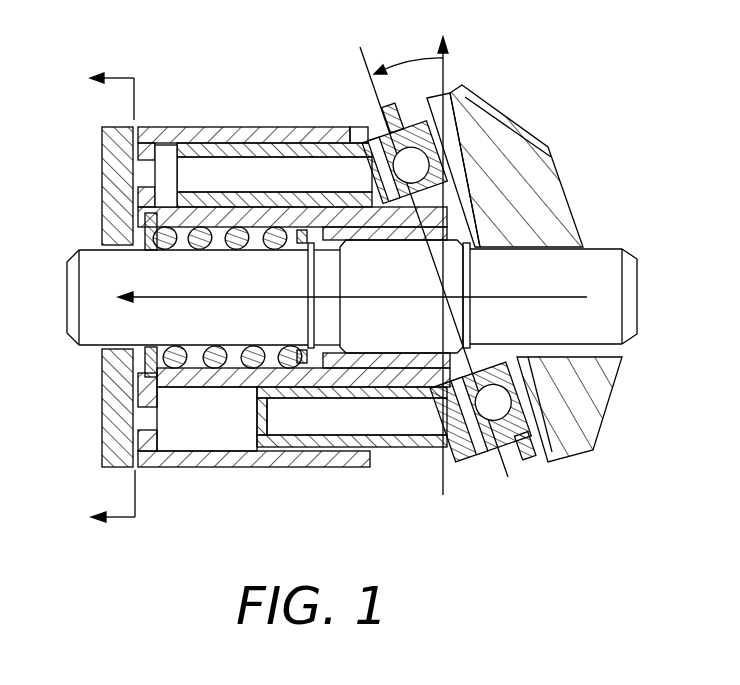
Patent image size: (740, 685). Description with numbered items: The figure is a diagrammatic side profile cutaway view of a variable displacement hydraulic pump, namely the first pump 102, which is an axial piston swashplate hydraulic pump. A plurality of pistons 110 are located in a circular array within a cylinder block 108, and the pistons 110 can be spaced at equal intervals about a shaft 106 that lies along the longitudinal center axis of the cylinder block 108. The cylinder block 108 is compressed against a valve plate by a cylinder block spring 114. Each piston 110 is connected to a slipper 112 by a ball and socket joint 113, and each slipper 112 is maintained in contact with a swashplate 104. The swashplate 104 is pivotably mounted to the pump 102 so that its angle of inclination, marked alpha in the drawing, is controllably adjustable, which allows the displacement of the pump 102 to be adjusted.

The first pump 102 is at (267, 70).
The swashplate 104 is at (489, 114).
The shaft 106 is at (637, 292).
The cylinder block 108 is at (175, 458).
The pistons 110 is at (230, 143).
The slipper 112 is at (512, 440).
The ball and socket joint 113 is at (470, 420).
The cylinder block spring 114 is at (237, 388).